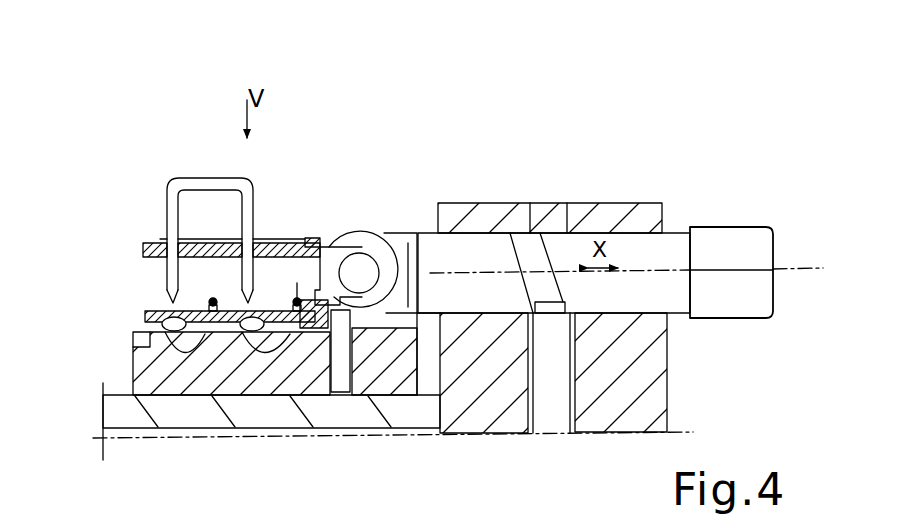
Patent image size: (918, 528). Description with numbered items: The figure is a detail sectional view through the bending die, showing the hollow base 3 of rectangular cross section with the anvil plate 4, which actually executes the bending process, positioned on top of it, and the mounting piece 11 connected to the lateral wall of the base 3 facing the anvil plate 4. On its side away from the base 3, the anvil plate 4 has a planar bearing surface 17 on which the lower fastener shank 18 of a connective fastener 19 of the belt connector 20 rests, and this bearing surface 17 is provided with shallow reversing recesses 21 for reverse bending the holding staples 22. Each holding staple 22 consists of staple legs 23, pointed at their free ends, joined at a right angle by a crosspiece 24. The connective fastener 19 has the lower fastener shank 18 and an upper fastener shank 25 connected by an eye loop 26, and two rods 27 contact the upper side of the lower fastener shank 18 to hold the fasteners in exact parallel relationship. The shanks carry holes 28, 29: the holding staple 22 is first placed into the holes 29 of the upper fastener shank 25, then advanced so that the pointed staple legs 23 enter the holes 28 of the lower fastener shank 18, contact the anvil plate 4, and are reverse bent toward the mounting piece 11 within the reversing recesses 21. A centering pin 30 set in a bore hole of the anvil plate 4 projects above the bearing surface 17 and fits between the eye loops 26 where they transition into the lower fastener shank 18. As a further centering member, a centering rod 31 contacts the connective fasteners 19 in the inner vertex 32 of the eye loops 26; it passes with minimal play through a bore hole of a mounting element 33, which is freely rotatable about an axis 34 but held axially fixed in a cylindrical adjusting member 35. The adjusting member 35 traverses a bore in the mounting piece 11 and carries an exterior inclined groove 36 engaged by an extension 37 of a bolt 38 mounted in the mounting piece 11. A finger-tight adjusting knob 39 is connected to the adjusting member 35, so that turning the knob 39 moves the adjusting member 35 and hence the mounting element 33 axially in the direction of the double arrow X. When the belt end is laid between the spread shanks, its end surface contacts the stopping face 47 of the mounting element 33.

The hollow base 3 is at (195, 415).
The anvil plate 4 is at (172, 384).
The mounting piece 11 is at (652, 369).
The planar bearing surface 17 is at (137, 347).
The lower fastener shank 18 is at (158, 310).
The connective fastener 19 is at (325, 200).
The belt connector 20 is at (134, 124).
The reversing recess 21 is at (148, 374).
The holding staple 22 is at (262, 182).
The staple legs 23 is at (167, 214).
The crosspiece 24 is at (205, 177).
The upper fastener shank 25 is at (216, 256).
The eye loop 26 is at (378, 244).
The rods 27 is at (218, 300).
The holes of lower fastener shank 28 is at (170, 304).
The holes of upper fastener shank 29 is at (233, 240).
The centering pin 30 is at (346, 372).
The centering rod 31 is at (359, 264).
The inner vertex 32 is at (381, 268).
The mounting element 33 is at (399, 246).
The axis 34 is at (807, 268).
The adjusting member 35 is at (667, 243).
The inclined groove 36 is at (534, 250).
The extension 37 is at (568, 305).
The bolt 38 is at (557, 402).
The adjusting knob 39 is at (728, 237).
The stopping face 47 is at (318, 383).